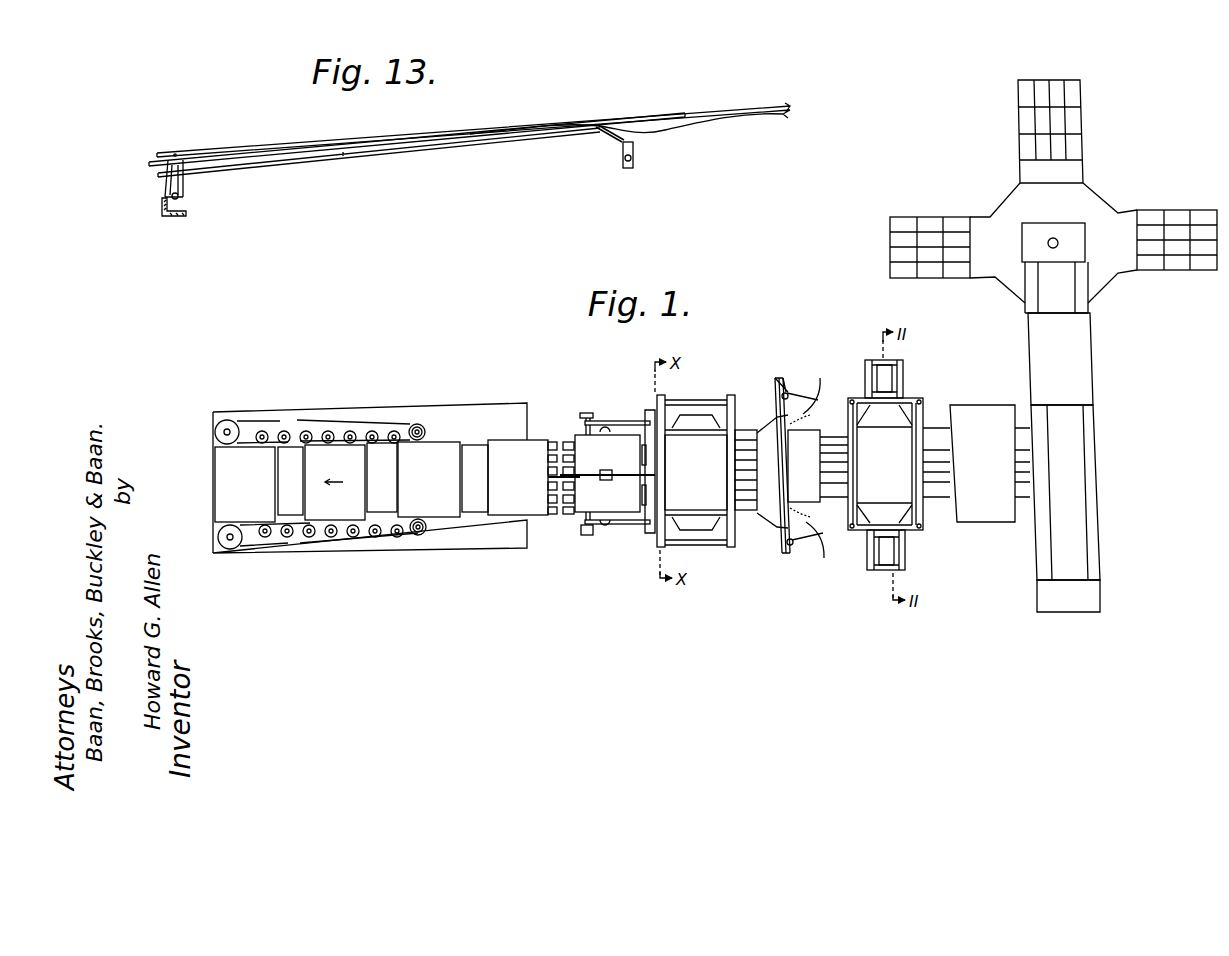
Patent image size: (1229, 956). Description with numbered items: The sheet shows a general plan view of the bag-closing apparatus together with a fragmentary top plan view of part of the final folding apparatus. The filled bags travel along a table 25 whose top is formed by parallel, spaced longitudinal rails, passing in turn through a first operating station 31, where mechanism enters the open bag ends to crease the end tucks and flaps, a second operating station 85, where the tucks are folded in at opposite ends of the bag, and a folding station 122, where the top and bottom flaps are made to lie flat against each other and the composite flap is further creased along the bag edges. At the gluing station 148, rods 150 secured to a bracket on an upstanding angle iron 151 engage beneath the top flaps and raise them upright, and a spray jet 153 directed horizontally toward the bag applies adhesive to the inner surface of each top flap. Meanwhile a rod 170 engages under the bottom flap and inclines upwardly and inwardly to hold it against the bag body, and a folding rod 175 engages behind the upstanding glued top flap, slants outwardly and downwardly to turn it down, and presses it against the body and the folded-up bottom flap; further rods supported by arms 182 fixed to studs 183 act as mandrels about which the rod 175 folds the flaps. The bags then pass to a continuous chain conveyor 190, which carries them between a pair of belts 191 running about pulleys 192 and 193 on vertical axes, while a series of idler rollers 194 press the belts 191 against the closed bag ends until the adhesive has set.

In FIG. 13, the rod 170 is at (276, 146).
In FIG. 13, the rails or rods 150 is at (225, 170).
In FIG. 13, the upstanding angle iron 151 is at (177, 218).
In FIG. 13, the arm 182 is at (598, 145).
In FIG. 13, the stud 183 is at (634, 158).
In FIG. 13, the folding rod or bar 175 is at (703, 135).
In FIG. 1, the pulley 193 is at (226, 427).
In FIG. 1, the idler rollers 194 is at (349, 430).
In FIG. 1, the belts 191 is at (392, 430).
In FIG. 1, the pulley 192 is at (419, 424).
In FIG. 1, the continuous chain conveyor 190 is at (553, 440).
In FIG. 1, the spray jet 153 is at (585, 538).
In FIG. 1, the gluing station 148 is at (608, 540).
In FIG. 1, the folding station 122 is at (709, 552).
In FIG. 1, the second operating station 85 is at (783, 565).
In FIG. 1, the first operating station 31 is at (867, 565).
In FIG. 1, the table 25 is at (935, 508).